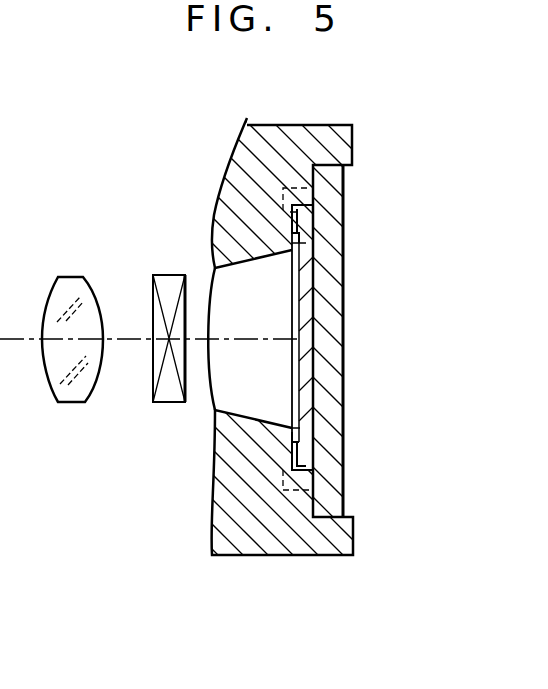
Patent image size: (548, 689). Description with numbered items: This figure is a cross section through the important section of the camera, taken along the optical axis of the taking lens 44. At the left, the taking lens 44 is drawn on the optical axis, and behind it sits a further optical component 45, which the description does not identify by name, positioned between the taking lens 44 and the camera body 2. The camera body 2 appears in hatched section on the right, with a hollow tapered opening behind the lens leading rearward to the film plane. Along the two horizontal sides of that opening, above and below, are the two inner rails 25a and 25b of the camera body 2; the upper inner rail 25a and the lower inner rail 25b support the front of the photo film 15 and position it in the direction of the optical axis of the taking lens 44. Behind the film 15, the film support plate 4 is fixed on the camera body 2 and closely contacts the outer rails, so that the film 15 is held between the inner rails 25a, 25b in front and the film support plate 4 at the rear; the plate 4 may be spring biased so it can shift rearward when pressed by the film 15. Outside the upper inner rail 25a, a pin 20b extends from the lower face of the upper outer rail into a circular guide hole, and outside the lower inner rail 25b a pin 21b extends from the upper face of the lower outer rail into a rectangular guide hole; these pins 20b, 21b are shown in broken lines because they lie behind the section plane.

The camera body 2 is at (277, 590).
The film support plate 4 is at (370, 332).
The photo film 15 is at (310, 286).
The pin 20b is at (313, 190).
The pin 21b is at (320, 484).
The upper inner rail 25a is at (305, 238).
The lower inner rail 25b is at (300, 432).
The taking lens 44 is at (70, 288).
The optical filter 45 is at (168, 285).